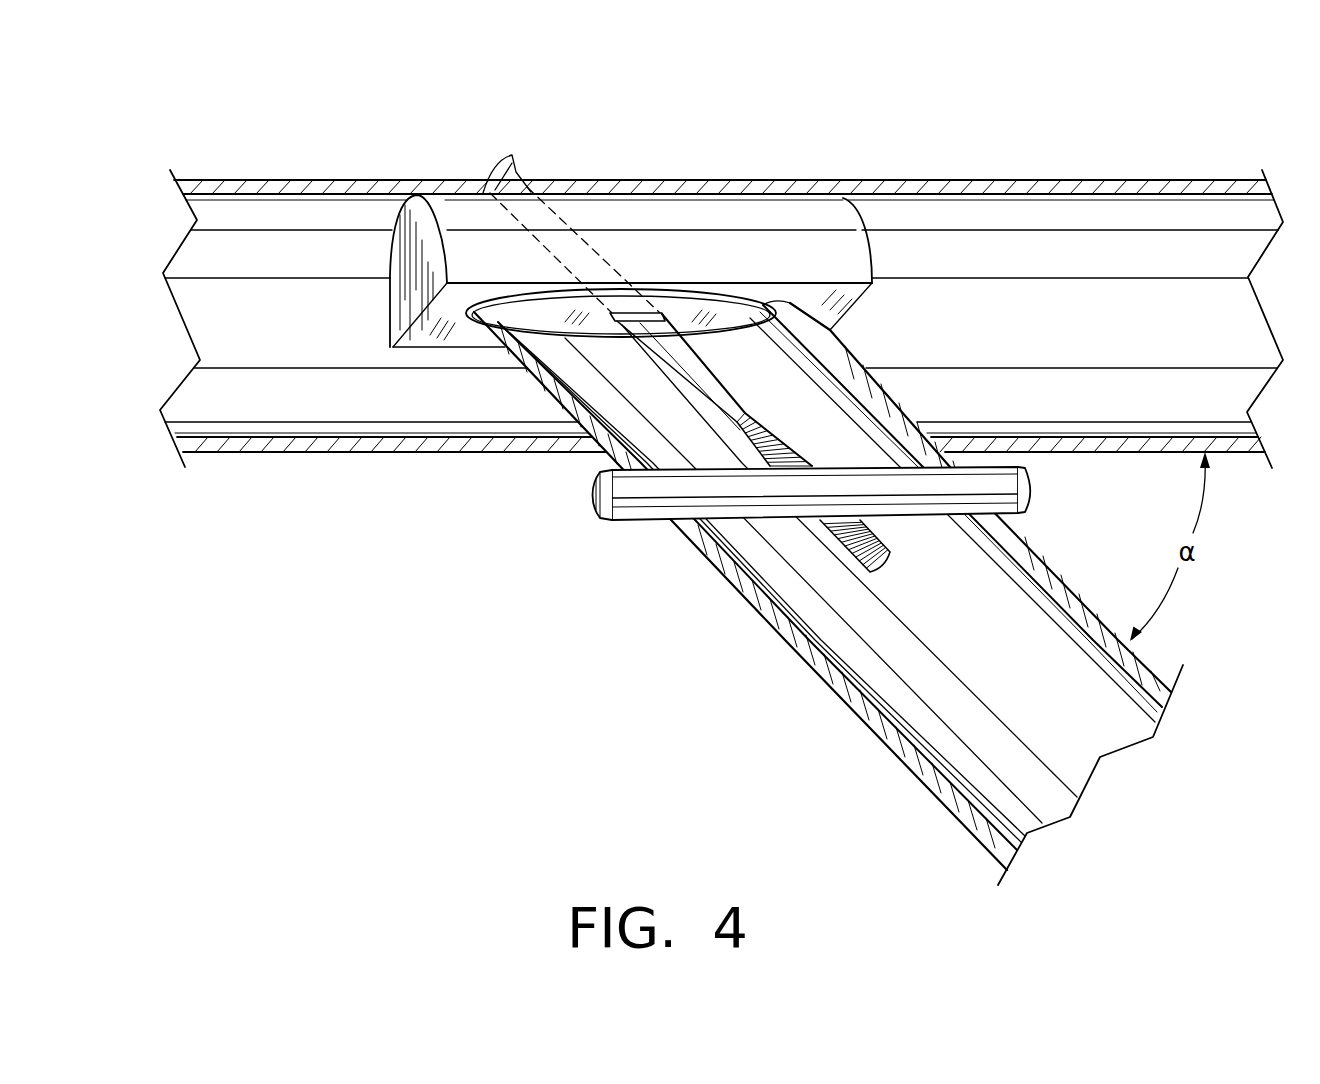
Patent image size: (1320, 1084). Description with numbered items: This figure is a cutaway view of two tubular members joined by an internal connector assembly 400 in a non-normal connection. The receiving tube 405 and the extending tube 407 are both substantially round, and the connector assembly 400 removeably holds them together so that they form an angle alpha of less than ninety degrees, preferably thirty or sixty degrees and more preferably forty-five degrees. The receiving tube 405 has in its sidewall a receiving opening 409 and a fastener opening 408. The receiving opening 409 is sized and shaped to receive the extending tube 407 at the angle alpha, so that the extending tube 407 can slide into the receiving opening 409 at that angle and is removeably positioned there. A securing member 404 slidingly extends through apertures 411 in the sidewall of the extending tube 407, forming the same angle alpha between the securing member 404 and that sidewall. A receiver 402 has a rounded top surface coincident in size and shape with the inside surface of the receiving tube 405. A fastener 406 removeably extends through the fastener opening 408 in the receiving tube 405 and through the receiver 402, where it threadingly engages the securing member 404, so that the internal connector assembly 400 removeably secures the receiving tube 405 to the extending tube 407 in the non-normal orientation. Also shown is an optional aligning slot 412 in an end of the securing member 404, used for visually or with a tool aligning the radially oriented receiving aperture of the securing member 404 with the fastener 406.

The internal connector assembly 400 is at (968, 343).
The receiver 402 is at (648, 218).
The securing member 404 is at (635, 507).
The receiving tube 405 is at (883, 183).
The fastener 406 is at (550, 217).
The extending tube 407 is at (830, 678).
The fastener opening 408 is at (477, 192).
The receiving opening 409 is at (568, 458).
The apertures 411 is at (690, 527).
The aligning slot 412 is at (593, 497).